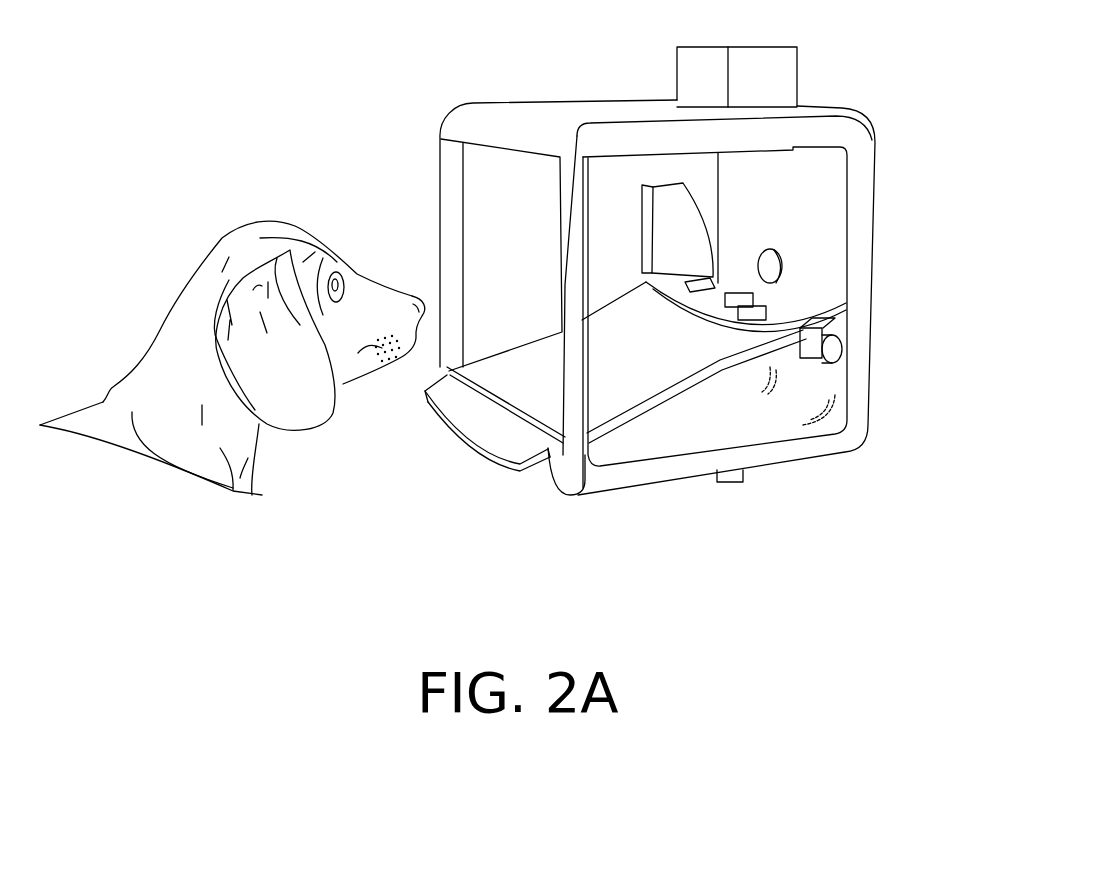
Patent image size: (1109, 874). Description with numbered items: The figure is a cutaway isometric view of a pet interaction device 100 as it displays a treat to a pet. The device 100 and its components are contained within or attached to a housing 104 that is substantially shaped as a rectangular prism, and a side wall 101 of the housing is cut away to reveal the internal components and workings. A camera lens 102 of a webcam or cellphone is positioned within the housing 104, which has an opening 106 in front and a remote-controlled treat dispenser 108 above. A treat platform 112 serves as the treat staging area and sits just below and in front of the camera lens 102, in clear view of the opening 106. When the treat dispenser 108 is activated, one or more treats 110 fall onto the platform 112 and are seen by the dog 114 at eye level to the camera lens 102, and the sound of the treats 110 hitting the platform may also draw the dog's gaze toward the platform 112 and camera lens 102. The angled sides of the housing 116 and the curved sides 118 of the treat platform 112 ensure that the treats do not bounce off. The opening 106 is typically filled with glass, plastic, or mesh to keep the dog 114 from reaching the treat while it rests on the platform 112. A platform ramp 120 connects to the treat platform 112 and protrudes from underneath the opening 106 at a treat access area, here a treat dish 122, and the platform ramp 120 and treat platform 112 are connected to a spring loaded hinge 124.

The pet interaction device 100 is at (877, 74).
The side wall 101 is at (742, 457).
The camera lens 102 is at (770, 268).
The housing 104 is at (508, 125).
The opening 106 is at (478, 198).
The remote-controlled treat dispenser 108 is at (698, 81).
The treats 110 is at (775, 312).
The treat platform 112 is at (775, 314).
The dog 114 is at (195, 337).
The angled sides of the housing 116 is at (685, 232).
The curved sides 118 is at (645, 282).
The platform ramp 120 is at (637, 340).
The treat dish 122 is at (452, 407).
The spring loaded hinge 124 is at (838, 350).